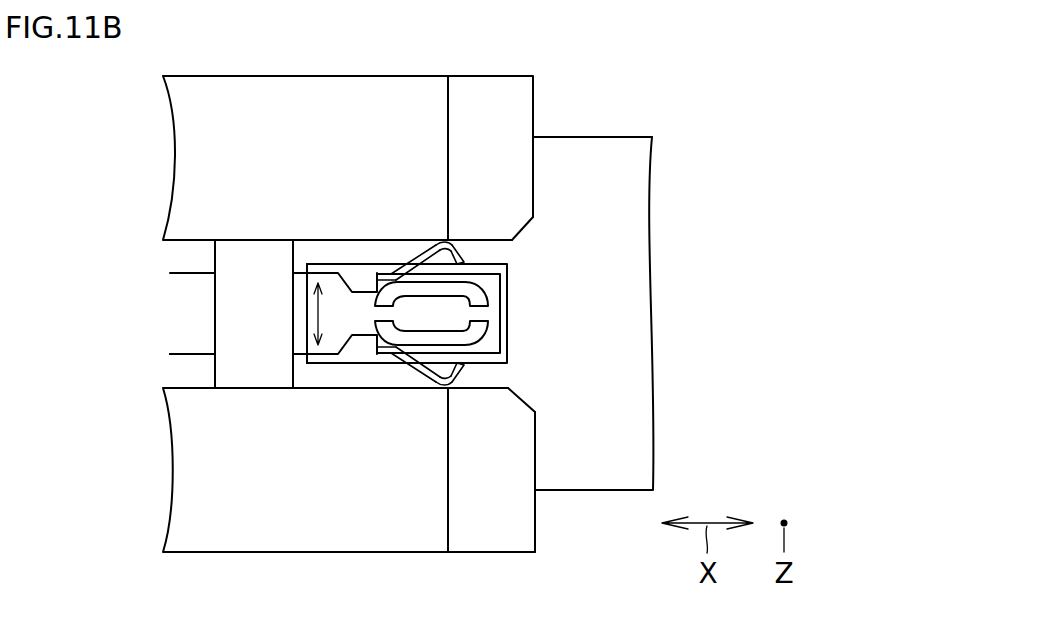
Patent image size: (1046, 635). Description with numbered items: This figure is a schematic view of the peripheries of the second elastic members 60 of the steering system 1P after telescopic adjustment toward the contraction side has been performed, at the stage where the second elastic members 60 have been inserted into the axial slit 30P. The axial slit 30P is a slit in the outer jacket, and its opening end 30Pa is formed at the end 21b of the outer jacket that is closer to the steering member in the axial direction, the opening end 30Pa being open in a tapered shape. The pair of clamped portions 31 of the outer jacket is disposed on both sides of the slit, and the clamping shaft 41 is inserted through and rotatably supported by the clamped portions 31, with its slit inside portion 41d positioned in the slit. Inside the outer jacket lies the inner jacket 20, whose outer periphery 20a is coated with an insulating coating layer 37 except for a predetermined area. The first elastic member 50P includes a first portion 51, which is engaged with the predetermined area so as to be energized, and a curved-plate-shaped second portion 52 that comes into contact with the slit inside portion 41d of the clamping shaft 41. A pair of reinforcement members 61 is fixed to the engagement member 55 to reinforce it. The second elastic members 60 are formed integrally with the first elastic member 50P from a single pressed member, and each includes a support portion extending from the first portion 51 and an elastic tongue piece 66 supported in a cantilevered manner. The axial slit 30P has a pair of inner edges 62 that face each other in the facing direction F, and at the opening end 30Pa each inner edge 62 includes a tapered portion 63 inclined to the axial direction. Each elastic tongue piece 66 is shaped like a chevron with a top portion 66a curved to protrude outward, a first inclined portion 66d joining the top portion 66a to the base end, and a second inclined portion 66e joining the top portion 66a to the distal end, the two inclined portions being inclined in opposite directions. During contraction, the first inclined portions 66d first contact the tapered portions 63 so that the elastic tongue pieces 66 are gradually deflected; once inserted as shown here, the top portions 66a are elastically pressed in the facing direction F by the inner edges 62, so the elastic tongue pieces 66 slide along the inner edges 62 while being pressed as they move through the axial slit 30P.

The steering system 1P is at (380, 602).
The inner jacket 20 is at (643, 147).
The outer periphery 20a is at (602, 148).
The end of the outer jacket 21b is at (500, 87).
The axial slit 30P is at (315, 373).
The opening end 30Pa is at (528, 265).
The clamped portions 31 is at (228, 87).
The coating layer 37 is at (545, 145).
The clamping shaft 41 is at (267, 250).
The slit inside portion 41d is at (232, 250).
The first elastic member 50P is at (200, 366).
The first portion 51 is at (507, 280).
The second portion 52 is at (190, 318).
The engagement member 55 is at (507, 342).
The second elastic members 60 is at (341, 268).
The reinforcement members 61 is at (456, 322).
The inner edges 62 is at (370, 243).
The tapered portion 63 is at (532, 222).
The elastic tongue pieces 66 is at (449, 323).
The top portion 66a is at (434, 243).
The first inclined portion 66d is at (405, 262).
The second inclined portion 66e is at (462, 250).
The facing direction F is at (293, 313).